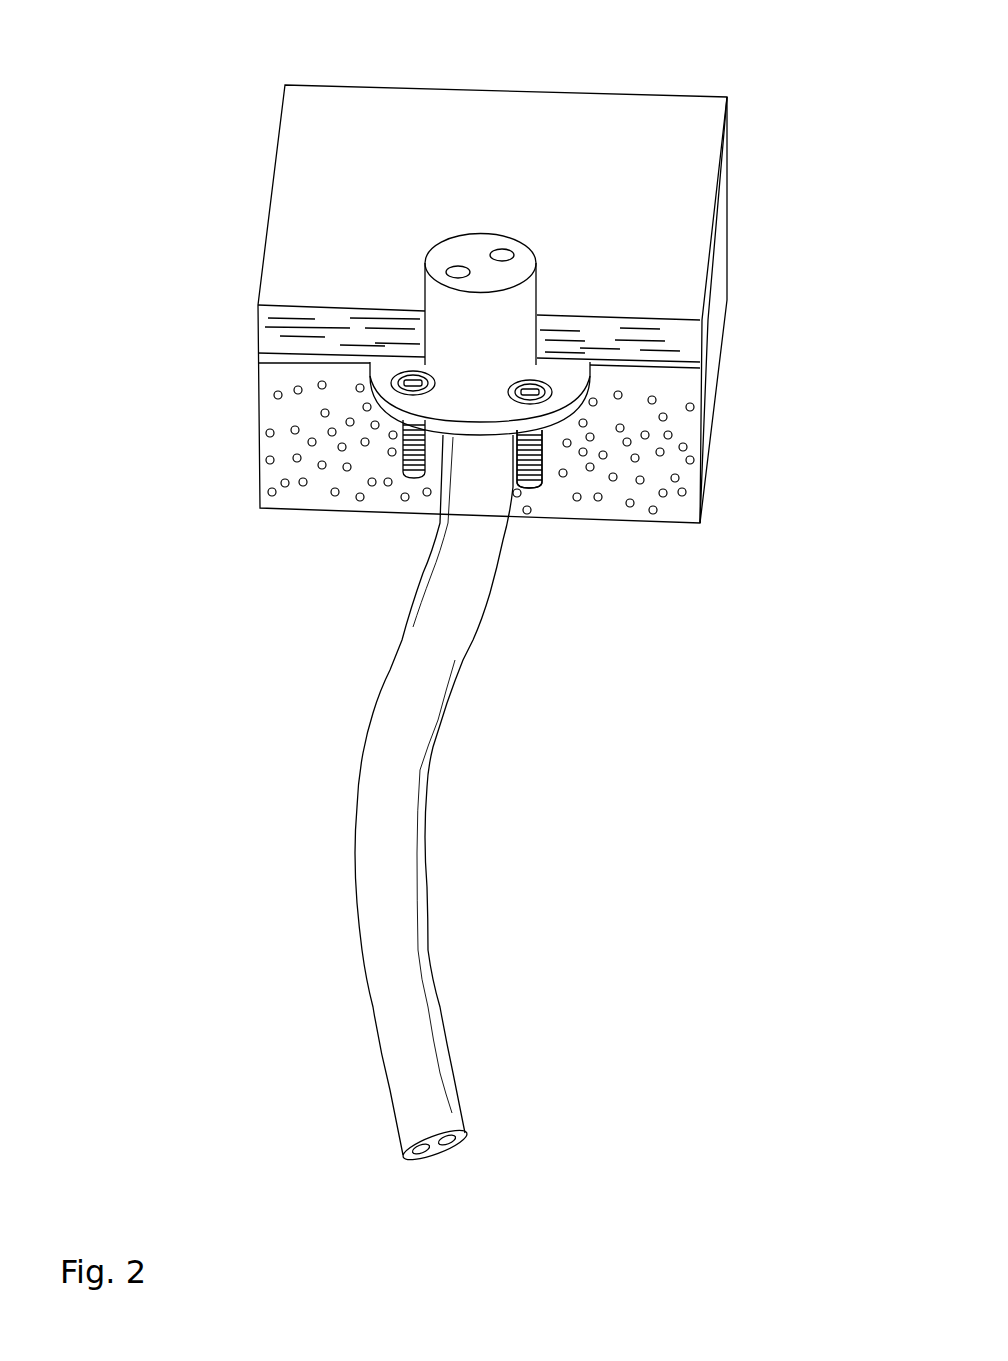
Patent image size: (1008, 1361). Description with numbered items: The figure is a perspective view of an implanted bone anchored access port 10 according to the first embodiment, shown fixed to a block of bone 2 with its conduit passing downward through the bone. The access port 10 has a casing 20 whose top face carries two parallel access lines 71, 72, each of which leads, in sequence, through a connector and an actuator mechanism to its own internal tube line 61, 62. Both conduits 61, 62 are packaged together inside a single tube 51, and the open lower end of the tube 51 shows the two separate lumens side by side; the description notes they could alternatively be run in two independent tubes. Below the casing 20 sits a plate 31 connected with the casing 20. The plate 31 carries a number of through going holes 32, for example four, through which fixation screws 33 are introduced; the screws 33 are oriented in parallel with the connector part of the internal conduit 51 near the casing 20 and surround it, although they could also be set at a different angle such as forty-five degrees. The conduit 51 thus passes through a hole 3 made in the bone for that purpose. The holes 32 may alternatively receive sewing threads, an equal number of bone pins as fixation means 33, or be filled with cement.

The skull bone 2 is at (695, 158).
The hole 3 is at (443, 482).
The bone anchored access port 10 is at (313, 540).
The casing 20 is at (517, 303).
The plate 31 is at (570, 382).
The through going holes 32 is at (540, 460).
The fixation screws 33 is at (563, 473).
The tube 51 is at (388, 928).
The internal tube line 61 is at (447, 1142).
The internal tube line 62 is at (421, 1150).
The access line 71 is at (502, 255).
The access line 72 is at (458, 272).